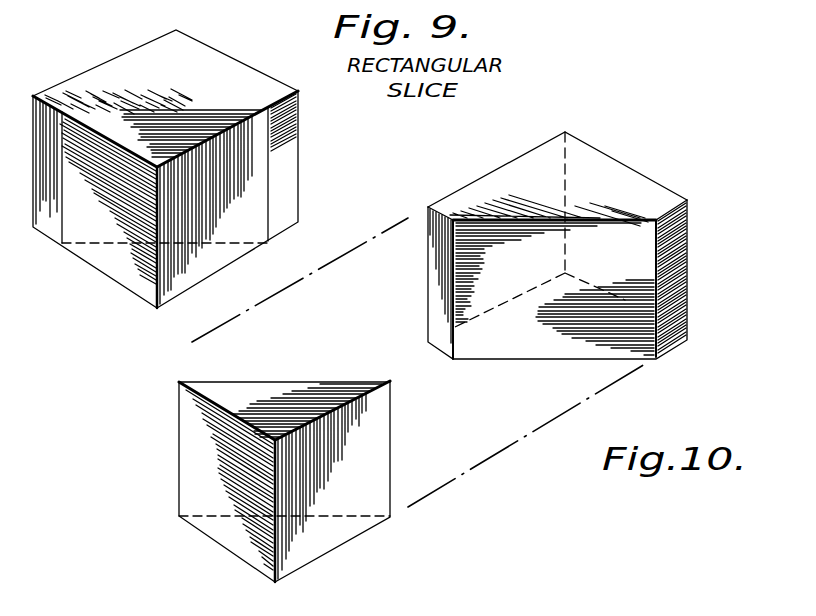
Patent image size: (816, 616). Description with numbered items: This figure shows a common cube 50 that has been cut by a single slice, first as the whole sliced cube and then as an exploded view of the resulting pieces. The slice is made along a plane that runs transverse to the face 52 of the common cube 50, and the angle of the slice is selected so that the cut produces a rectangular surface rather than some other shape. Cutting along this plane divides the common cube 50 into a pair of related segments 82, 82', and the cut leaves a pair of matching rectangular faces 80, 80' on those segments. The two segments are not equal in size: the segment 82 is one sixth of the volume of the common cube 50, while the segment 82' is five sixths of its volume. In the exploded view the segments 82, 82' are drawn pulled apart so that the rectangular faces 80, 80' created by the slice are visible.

In FIG. 9, the common cube 50 is at (238, 36).
In FIG. 9, the face 52 is at (106, 68).
In FIG. 9, the segment 82 is at (95, 205).
In FIG. 10, the segment 82 is at (195, 482).
In FIG. 9, the segment 82' is at (267, 199).
In FIG. 10, the rectangular face 80 is at (288, 481).
In FIG. 10, the rectangular face 80' is at (557, 267).